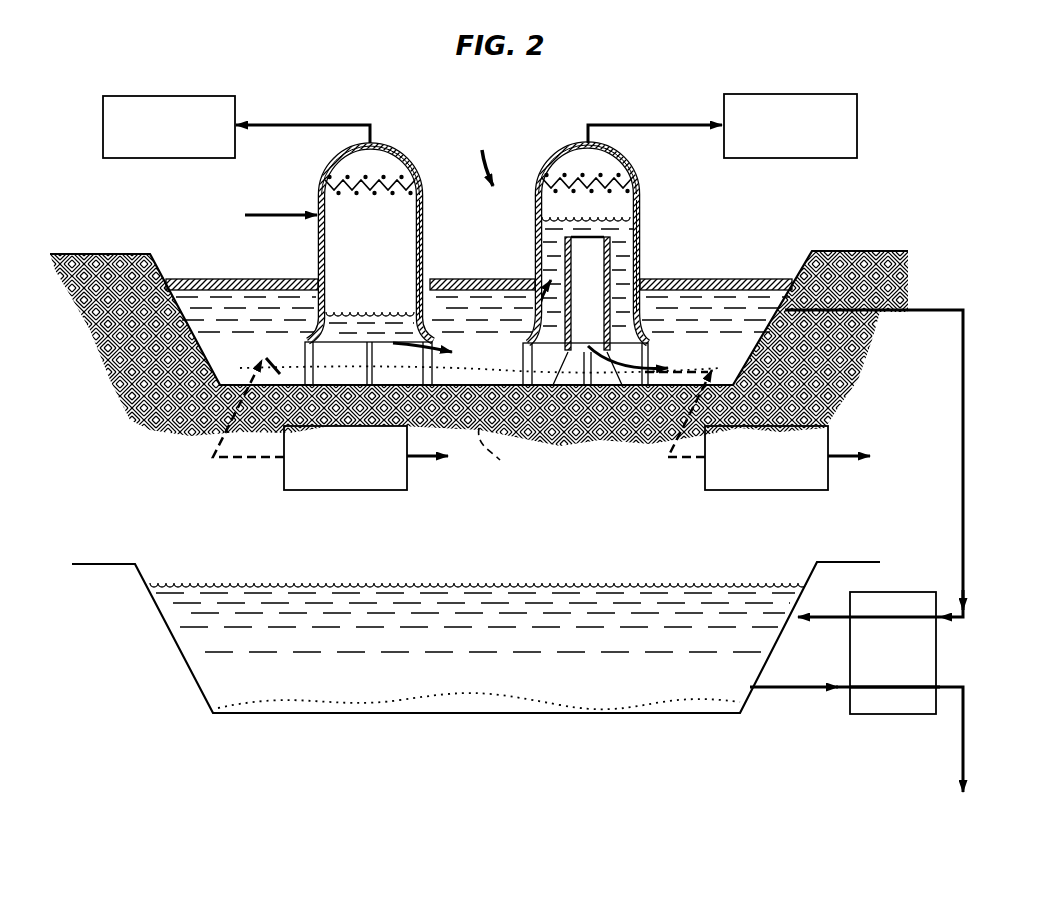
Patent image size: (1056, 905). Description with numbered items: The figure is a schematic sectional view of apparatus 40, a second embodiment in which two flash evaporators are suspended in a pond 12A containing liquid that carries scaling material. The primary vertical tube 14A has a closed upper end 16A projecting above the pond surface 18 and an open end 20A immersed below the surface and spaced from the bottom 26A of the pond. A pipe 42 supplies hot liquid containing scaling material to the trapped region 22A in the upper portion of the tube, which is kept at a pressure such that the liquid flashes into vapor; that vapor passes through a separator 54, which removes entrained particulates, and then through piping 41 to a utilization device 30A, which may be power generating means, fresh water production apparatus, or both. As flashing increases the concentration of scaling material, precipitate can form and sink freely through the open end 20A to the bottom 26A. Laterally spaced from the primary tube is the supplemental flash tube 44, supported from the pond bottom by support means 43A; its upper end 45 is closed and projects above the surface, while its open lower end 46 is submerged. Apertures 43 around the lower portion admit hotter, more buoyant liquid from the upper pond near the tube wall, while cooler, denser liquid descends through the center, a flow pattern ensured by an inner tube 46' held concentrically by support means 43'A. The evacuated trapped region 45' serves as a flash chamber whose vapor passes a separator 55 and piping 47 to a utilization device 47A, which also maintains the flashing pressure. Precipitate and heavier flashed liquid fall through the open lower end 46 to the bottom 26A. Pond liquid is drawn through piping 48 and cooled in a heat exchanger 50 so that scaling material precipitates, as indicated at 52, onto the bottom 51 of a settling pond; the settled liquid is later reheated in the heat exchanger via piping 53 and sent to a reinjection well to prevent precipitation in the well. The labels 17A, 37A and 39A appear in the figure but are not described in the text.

The pond 12A is at (762, 296).
The primary vertical tube 14A is at (428, 236).
The closed upper end 16A is at (316, 180).
The brine extraction flow path 17A is at (305, 354).
The pond surface 18 is at (500, 277).
The open end 20A is at (402, 338).
The trapped region 22A is at (384, 162).
The bottom of the pond 26A is at (726, 392).
The utilization device 30A is at (140, 160).
The brine outlet 37A is at (514, 454).
The extraction means 39A is at (346, 491).
The apparatus 40 is at (480, 156).
The piping 41 is at (297, 124).
The pipe 42 is at (262, 222).
The apertures 43 is at (518, 302).
The support means 43A is at (446, 356).
The support means 43'A is at (585, 411).
The supplemental flash tube 44 is at (642, 233).
The upper end 45 is at (588, 219).
The trapped region 45' is at (602, 167).
The open lower end 46 is at (638, 357).
The inner tube 46' is at (618, 283).
The piping 47 is at (646, 124).
The utilization device 47A is at (826, 160).
The piping 48 is at (966, 400).
The heat exchanger 50 is at (937, 642).
The bottom of settling pond 51 is at (490, 700).
The precipitated scaling material 52 is at (348, 705).
The piping 53 is at (966, 762).
The separator 54 is at (354, 196).
The separator 55 is at (608, 194).